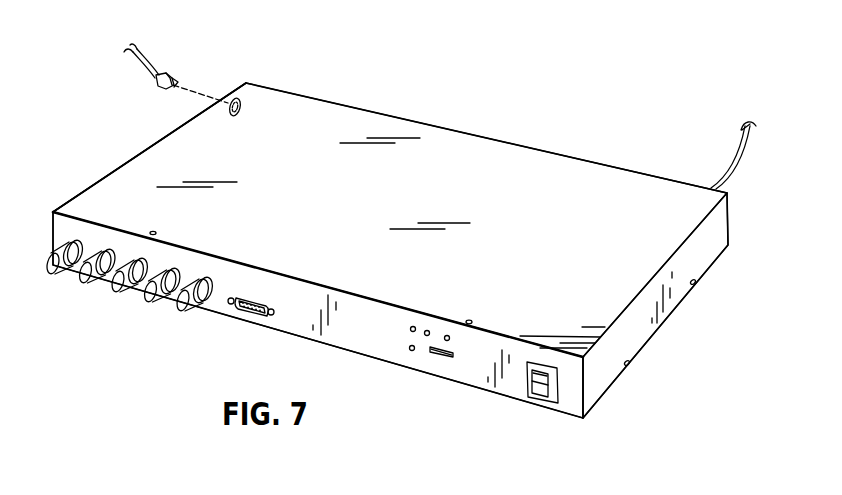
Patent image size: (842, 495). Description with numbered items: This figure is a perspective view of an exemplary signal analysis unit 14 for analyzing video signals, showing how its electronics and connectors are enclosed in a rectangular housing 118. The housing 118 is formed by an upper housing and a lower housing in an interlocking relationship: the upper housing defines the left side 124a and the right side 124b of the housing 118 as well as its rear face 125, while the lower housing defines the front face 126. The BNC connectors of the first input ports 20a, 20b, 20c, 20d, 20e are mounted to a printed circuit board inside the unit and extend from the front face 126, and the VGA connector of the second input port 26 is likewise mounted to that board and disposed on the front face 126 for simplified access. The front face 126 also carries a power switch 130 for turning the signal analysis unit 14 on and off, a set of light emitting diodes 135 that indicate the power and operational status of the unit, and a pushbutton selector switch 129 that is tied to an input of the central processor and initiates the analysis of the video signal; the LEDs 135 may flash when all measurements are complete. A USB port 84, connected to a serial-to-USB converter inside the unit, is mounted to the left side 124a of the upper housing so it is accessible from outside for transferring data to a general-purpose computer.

The signal analysis unit 14 is at (536, 91).
The first input port 20a is at (50, 276).
The first input port 20b is at (86, 283).
The first input port 20c is at (117, 292).
The first input port 20d is at (150, 302).
The first input port 20e is at (183, 311).
The second input port 26 is at (249, 316).
The USB port 84 is at (228, 102).
The housing 118 is at (427, 152).
The left side 124a is at (135, 156).
The right side 124b is at (668, 306).
The rear face 125 is at (652, 177).
The front face 126 is at (358, 338).
The pushbutton selector switch 129 is at (446, 359).
The power switch 130 is at (537, 405).
The light emitting diodes 135 is at (422, 345).